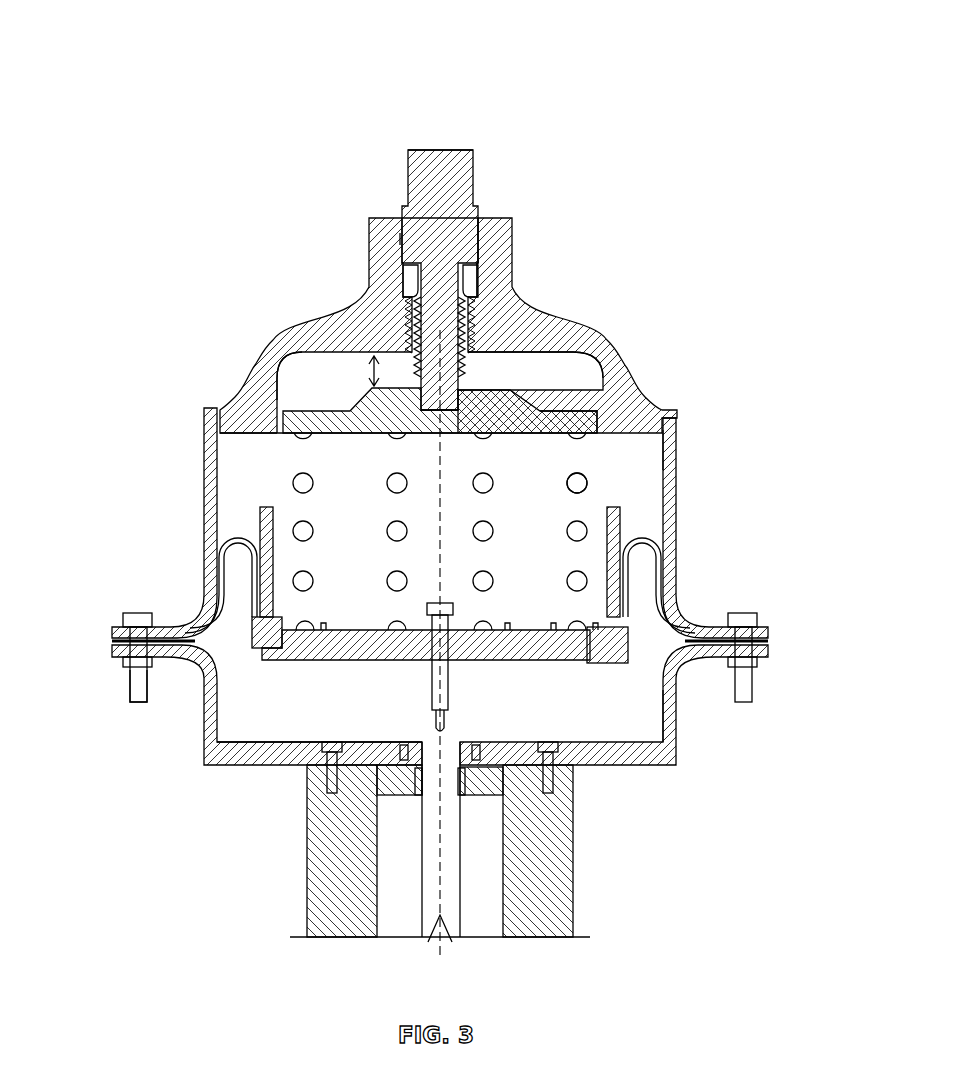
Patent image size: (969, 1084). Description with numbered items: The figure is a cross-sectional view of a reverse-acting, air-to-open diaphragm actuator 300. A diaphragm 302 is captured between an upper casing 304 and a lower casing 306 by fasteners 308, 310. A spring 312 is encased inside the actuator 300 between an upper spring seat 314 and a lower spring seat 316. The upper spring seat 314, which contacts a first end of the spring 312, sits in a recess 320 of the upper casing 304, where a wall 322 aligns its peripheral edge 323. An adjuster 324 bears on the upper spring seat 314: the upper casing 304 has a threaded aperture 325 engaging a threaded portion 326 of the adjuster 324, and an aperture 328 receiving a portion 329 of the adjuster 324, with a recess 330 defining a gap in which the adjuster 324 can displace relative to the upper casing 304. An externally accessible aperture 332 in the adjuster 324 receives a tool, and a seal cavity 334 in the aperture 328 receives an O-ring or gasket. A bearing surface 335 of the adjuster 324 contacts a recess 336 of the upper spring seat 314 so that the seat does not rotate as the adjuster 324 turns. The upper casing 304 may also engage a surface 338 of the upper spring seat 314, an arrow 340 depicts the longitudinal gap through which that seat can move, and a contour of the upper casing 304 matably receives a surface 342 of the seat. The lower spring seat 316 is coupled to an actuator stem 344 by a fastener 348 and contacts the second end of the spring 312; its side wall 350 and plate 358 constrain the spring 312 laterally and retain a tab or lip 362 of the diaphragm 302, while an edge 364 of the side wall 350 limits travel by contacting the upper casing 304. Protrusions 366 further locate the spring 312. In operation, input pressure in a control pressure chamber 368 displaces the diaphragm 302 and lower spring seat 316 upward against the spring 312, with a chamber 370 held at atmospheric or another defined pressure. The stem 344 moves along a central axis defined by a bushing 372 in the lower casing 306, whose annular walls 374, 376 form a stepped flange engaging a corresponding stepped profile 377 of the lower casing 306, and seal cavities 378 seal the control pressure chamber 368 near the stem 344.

The actuator 300 is at (220, 48).
The diaphragm 302 is at (612, 547).
The upper casing 304 is at (206, 445).
The lower casing 306 is at (215, 748).
The fastener 308 is at (137, 613).
The fastener 310 is at (770, 622).
The spring 312 is at (145, 685).
The upper spring seat 314 is at (676, 442).
The lower spring seat 316 is at (674, 712).
The recess 320 is at (278, 365).
The wall 322 is at (272, 430).
The peripheral edge 323 is at (280, 425).
The adjuster 324 is at (455, 175).
The threaded aperture 325 is at (538, 350).
The threaded portion 326 is at (402, 327).
The aperture 328 is at (480, 262).
The portion 329 is at (397, 228).
The recess 330 is at (468, 274).
The aperture 332 is at (421, 150).
The seal cavity 334 is at (480, 240).
The bearing surface 335 is at (590, 480).
The recess 336 is at (436, 422).
The surface 338 is at (505, 355).
The arrow 340 is at (372, 390).
The surface 342 is at (520, 405).
The actuator stem 344 is at (427, 893).
The fastener 348 is at (448, 690).
The side wall 350 is at (660, 558).
The plate 358 is at (324, 632).
The tab or lip 362 is at (628, 660).
The edge 364 is at (242, 540).
The protrusions 366 is at (308, 632).
The control pressure chamber 368 is at (382, 708).
The chamber 370 is at (367, 514).
The bushing 372 is at (409, 790).
The annular wall 374 is at (472, 752).
The annular wall 376 is at (478, 762).
The stepped profile 377 is at (405, 770).
The seal cavities 378 is at (465, 792).